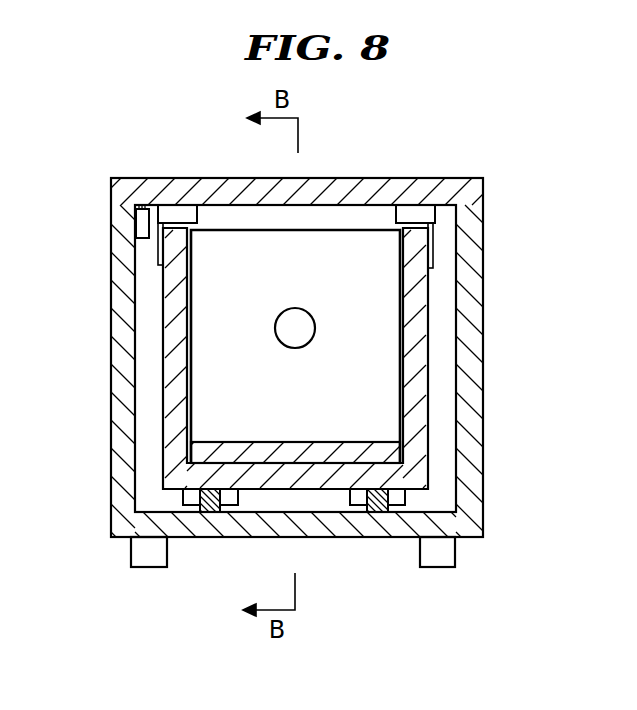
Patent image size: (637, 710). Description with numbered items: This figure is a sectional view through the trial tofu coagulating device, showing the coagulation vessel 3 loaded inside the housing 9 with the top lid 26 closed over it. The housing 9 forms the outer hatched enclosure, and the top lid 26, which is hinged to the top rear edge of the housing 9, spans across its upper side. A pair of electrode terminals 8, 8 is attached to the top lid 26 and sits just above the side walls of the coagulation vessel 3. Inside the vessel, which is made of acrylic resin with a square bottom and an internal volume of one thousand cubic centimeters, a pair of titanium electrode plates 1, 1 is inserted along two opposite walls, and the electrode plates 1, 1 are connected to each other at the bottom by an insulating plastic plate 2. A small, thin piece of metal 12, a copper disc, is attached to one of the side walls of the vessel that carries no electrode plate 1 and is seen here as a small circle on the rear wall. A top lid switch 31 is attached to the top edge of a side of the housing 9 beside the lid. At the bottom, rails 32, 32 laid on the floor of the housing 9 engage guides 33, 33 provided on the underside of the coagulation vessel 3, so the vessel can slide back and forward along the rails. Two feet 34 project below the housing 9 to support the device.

The electrode plate 1 is at (193, 265).
The insulating plastic plate 2 is at (263, 448).
The coagulation vessel 3 is at (175, 308).
The electrode terminal 8 is at (178, 210).
The housing 9 is at (111, 371).
The small, thin piece of metal 12 is at (302, 320).
The top lid 26 is at (352, 180).
The top lid switch 31 is at (140, 222).
The rail 32 is at (373, 510).
The guide 33 is at (225, 505).
The leg 34 is at (435, 567).